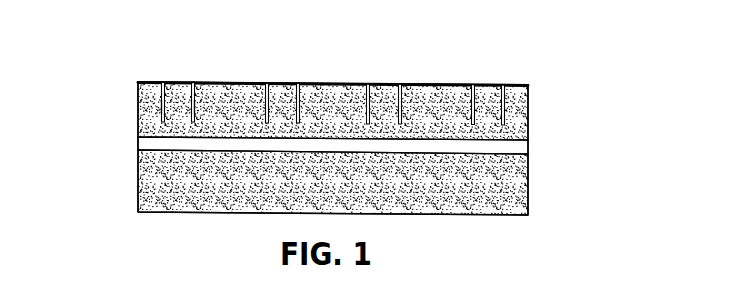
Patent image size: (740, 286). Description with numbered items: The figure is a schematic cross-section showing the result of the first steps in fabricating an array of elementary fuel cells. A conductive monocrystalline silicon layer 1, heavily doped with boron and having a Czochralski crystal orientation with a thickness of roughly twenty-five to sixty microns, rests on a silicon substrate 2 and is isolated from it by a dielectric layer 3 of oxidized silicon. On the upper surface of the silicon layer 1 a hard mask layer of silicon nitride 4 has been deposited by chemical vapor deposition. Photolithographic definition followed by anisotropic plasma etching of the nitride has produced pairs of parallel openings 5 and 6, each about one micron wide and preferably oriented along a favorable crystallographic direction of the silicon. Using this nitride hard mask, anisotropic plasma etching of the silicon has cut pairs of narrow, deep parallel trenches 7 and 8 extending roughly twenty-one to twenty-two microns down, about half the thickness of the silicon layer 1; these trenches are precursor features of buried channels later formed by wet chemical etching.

The conductive monocrystalline silicon layer 1 is at (528, 105).
The silicon substrate 2 is at (528, 197).
The dielectric layer 3 is at (528, 147).
The hard mask layer of silicon nitride 4 is at (518, 86).
The parallel opening 5 is at (163, 82).
The parallel opening 6 is at (193, 82).
The parallel trench 7 is at (158, 107).
The parallel trench 8 is at (193, 104).